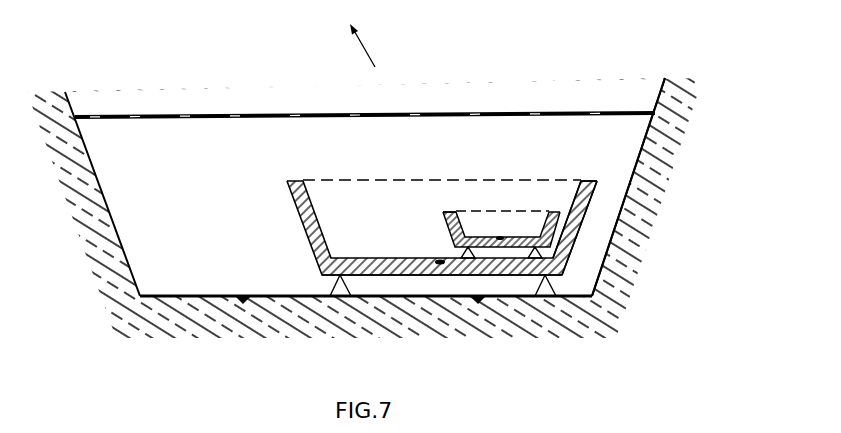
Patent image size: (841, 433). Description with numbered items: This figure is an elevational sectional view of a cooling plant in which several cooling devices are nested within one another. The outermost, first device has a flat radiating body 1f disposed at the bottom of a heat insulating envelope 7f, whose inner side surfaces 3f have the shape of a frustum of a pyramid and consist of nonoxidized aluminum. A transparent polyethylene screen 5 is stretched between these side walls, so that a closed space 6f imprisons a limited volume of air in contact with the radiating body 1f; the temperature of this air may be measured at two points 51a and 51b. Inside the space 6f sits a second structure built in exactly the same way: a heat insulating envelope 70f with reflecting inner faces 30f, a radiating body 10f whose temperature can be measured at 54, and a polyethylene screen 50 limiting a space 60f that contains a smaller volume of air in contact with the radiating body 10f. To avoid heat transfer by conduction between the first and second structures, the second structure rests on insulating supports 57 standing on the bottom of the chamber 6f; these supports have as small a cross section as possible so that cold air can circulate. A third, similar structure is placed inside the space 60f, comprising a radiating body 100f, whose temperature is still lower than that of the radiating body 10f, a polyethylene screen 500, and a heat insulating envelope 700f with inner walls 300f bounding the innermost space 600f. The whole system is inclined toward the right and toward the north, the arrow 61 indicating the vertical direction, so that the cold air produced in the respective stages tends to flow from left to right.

The flat radiating body 1f is at (163, 302).
The inner side surfaces 3f is at (110, 218).
The transparent screen 5 is at (187, 114).
The closed space 6f is at (210, 191).
The heat insulating envelope 7f is at (604, 285).
The radiating body 10f is at (383, 258).
The reflecting inner faces 30f is at (260, 240).
The polyethylene screen 50 is at (318, 177).
The temperature measuring point 51a is at (243, 302).
The temperature measuring point 51b is at (484, 300).
The temperature measuring point 54 is at (443, 265).
The insulating supports 57 is at (330, 289).
The space 60f is at (410, 223).
The arrow 61 is at (368, 48).
The heat insulating envelope 70f is at (532, 259).
The radiating body 100f is at (497, 236).
The inner walls 300f is at (578, 179).
The polyethylene screen 500 is at (455, 212).
The inner cavity 600f is at (528, 232).
The heat insulating envelope 700f is at (566, 222).